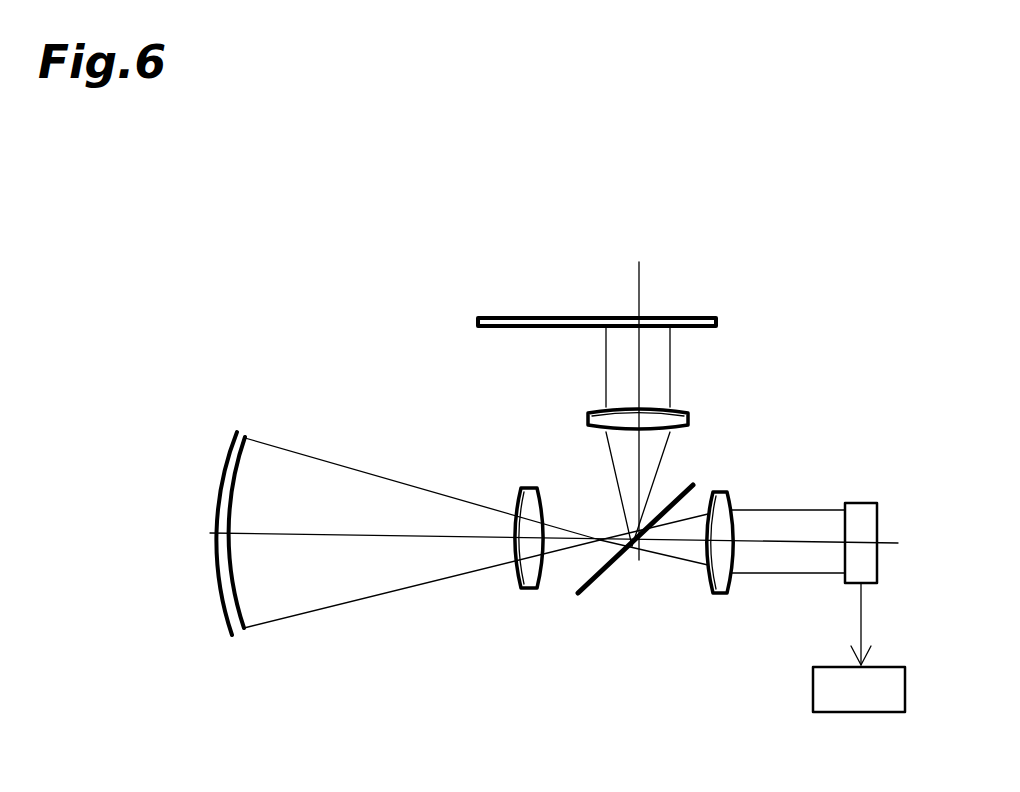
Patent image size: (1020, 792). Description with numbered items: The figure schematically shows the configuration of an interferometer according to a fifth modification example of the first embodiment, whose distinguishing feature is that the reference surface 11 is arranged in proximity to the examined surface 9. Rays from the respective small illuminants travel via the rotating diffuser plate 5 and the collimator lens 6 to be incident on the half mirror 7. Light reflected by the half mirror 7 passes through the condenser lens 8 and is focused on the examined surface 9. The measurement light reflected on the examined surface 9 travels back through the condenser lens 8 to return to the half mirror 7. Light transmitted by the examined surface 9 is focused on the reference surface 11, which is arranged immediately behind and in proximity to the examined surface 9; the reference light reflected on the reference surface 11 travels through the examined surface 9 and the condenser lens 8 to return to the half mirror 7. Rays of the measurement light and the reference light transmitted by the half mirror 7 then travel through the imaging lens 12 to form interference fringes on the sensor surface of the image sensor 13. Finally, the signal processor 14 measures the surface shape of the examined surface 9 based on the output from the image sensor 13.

The rotating diffuser plate 5 is at (662, 320).
The collimator lens 6 is at (688, 418).
The half mirror 7 is at (612, 557).
The condenser lens 8 is at (525, 489).
The examined surface 9 is at (238, 478).
The reference surface 11 is at (237, 580).
The imaging lens 12 is at (721, 491).
The image sensor 13 is at (860, 510).
The signal processor 14 is at (840, 704).